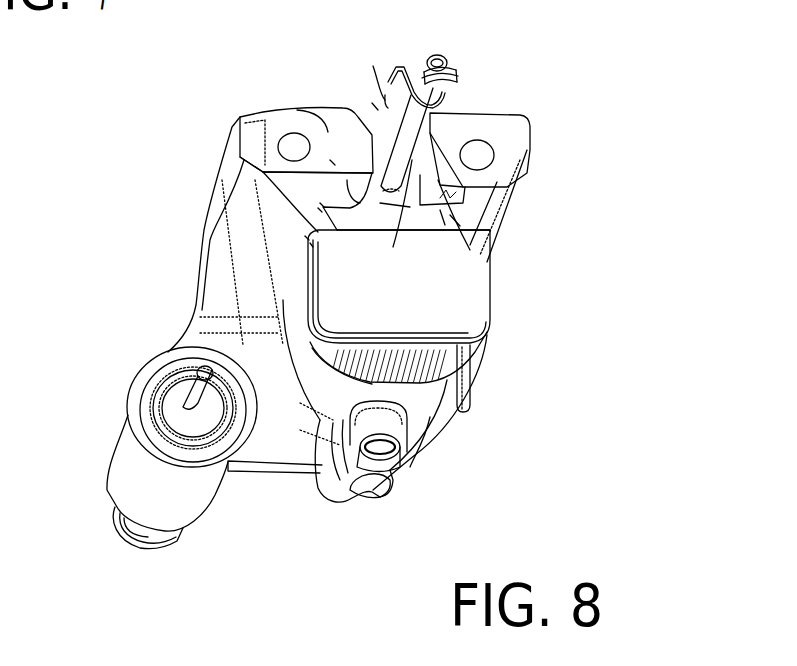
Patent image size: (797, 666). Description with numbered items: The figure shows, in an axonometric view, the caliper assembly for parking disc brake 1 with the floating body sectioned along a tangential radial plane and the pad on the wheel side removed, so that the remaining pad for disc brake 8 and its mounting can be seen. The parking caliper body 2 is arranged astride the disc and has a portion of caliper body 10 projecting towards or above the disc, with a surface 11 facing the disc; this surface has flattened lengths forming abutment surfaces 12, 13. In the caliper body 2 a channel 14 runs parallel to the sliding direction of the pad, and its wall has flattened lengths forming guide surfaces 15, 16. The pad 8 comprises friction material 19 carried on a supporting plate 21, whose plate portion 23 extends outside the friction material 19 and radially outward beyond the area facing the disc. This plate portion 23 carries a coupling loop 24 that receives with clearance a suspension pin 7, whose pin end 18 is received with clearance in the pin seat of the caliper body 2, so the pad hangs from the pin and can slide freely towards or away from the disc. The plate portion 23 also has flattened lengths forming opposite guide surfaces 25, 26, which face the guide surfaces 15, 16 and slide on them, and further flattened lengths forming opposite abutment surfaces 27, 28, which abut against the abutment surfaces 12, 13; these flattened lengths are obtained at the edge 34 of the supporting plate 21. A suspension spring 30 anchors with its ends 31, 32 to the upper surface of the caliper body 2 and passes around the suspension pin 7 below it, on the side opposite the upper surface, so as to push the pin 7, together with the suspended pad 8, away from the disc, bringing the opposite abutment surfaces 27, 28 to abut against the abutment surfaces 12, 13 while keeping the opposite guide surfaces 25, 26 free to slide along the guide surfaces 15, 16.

The caliper assembly for parking disc brake 1 is at (549, 101).
The parking caliper body 2 is at (490, 198).
The suspension pin 7 is at (373, 66).
The pad for disc brake 8 is at (457, 280).
The portion of caliper body 10 is at (240, 117).
The surface facing the disc 11 is at (320, 181).
The abutment surface 12 is at (318, 208).
The abutment surface 13 is at (467, 173).
The channel 14 is at (437, 121).
The guide surface 15 is at (372, 103).
The guide surface 16 is at (490, 327).
The pin end 18 is at (405, 78).
The friction material 19 is at (413, 303).
The supporting plate 21 is at (293, 252).
The plate portion 23 is at (470, 365).
The coupling loop 24 is at (330, 160).
The opposite guide surface 25 is at (310, 243).
The opposite guide surface 26 is at (445, 225).
The opposite abutment surface 27 is at (320, 203).
The opposite abutment surface 28 is at (460, 226).
The suspension spring 30 is at (462, 75).
The spring end 31 is at (458, 79).
The spring end 32 is at (388, 108).
The edge of the plate 34 is at (305, 236).